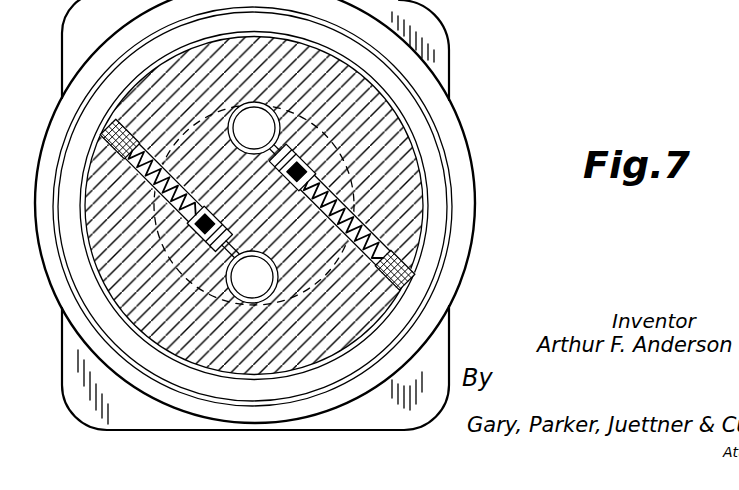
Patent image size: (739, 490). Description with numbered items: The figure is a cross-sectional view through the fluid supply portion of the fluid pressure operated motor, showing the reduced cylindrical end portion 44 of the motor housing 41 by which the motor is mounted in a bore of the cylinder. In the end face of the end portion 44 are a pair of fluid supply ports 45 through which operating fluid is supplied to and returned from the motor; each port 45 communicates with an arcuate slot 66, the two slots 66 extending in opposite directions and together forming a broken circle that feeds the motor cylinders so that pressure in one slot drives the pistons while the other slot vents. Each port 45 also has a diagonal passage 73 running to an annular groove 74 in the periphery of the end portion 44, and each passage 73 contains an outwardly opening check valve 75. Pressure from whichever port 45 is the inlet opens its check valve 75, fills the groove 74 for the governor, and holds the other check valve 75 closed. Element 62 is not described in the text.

The housing 41 is at (462, 131).
The reduced cylindrical end portion 44 is at (425, 170).
The annular groove 74 is at (425, 208).
The fluid supply ports 45 is at (273, 113).
The arcuate slot 66 is at (300, 124).
The diagonal passage 73 is at (150, 182).
The check valve 75 is at (284, 172).
The element 62 is at (430, 0).